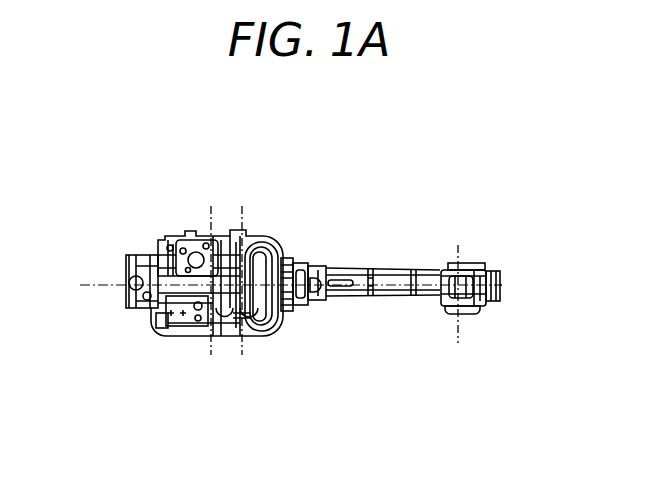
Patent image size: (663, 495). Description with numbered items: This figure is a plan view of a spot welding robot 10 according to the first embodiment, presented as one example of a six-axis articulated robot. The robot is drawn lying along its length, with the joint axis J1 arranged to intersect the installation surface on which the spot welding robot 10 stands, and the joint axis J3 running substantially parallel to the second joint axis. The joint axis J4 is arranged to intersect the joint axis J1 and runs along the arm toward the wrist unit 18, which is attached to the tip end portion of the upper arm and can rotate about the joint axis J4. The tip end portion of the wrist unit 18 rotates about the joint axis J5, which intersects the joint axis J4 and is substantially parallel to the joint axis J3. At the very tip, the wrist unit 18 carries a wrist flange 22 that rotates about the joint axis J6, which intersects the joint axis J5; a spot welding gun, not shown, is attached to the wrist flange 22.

The spot welding robot 10 is at (333, 207).
The wrist unit 18 is at (440, 256).
The wrist flange 22 is at (482, 265).
The joint axis J1 is at (198, 287).
The joint axis J3 is at (231, 302).
The joint axis J4 is at (95, 281).
The joint axis J5 is at (450, 312).
The joint axis J6 is at (494, 277).